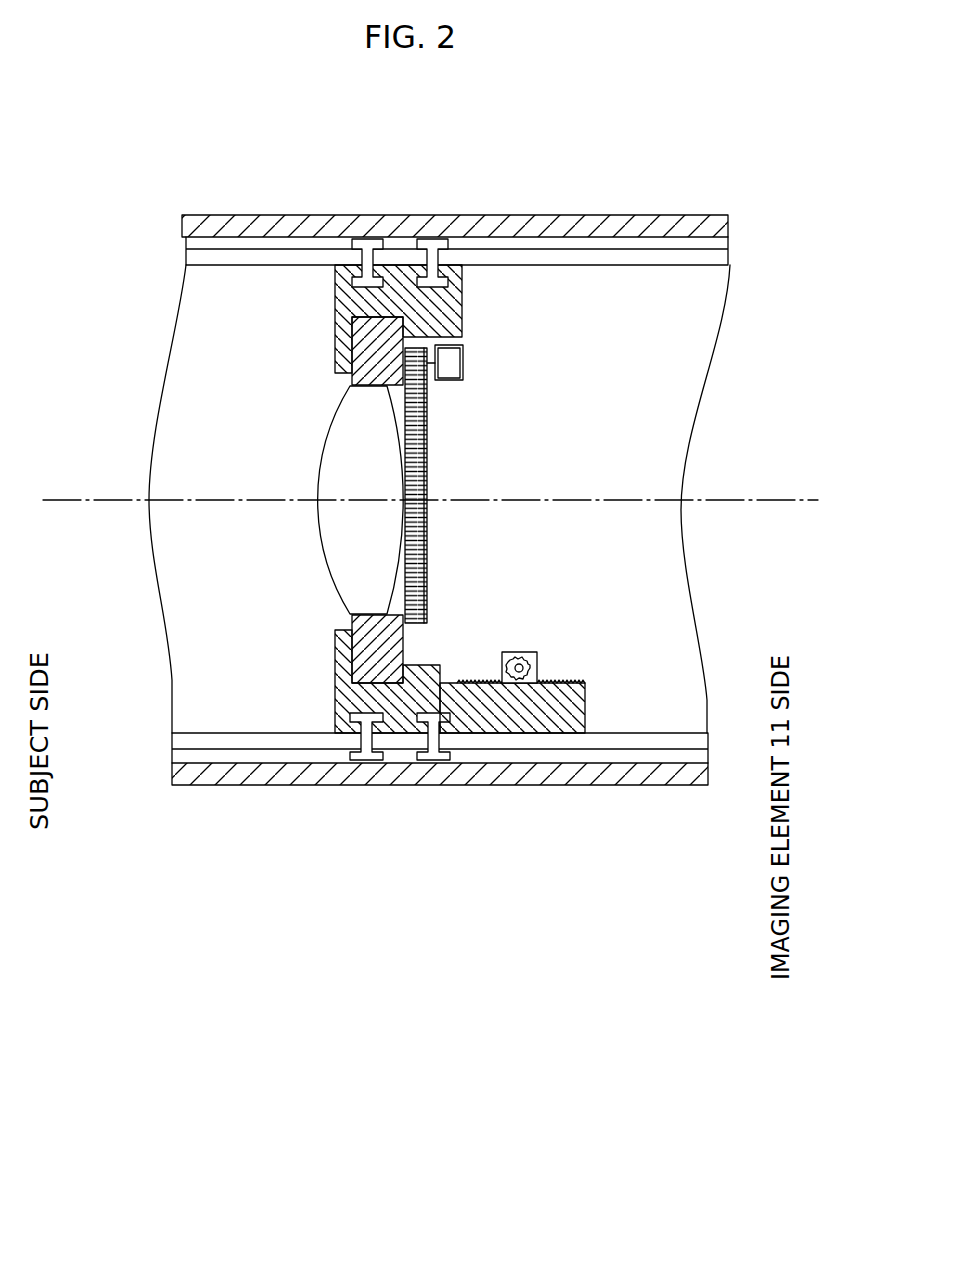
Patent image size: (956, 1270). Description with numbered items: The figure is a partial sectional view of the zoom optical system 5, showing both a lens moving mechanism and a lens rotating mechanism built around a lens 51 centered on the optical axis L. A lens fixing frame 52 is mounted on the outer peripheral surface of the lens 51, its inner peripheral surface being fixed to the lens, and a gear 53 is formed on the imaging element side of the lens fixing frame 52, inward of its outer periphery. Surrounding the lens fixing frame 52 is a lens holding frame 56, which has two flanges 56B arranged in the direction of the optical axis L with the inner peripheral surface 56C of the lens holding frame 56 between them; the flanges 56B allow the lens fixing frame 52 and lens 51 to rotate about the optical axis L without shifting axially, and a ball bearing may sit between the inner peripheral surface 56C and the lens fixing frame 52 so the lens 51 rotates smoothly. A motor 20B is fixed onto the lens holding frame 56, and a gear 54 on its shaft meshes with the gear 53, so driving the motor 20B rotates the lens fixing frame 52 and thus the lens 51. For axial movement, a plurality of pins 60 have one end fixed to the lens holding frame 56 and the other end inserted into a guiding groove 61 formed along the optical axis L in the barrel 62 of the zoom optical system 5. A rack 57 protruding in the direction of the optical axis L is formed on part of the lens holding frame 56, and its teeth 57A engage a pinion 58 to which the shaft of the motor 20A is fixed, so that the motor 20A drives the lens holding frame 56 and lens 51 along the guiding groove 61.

The zoom optical system 5 is at (597, 176).
The motor 20A is at (519, 652).
The motor 20B is at (463, 363).
The lens 51 is at (350, 447).
The lens fixing frame 52 is at (370, 357).
The gear 53 is at (420, 417).
The gear 54 is at (463, 343).
The lens holding frame 56 is at (457, 305).
The flange 56B is at (337, 343).
The inner peripheral surface 56C is at (350, 316).
The rack 57 is at (585, 707).
The teeth 57A is at (560, 682).
The pinion 58 is at (533, 650).
The pins 60 is at (433, 243).
The guiding groove 61 is at (634, 236).
The barrel 62 is at (537, 226).
The optical axis L is at (733, 500).